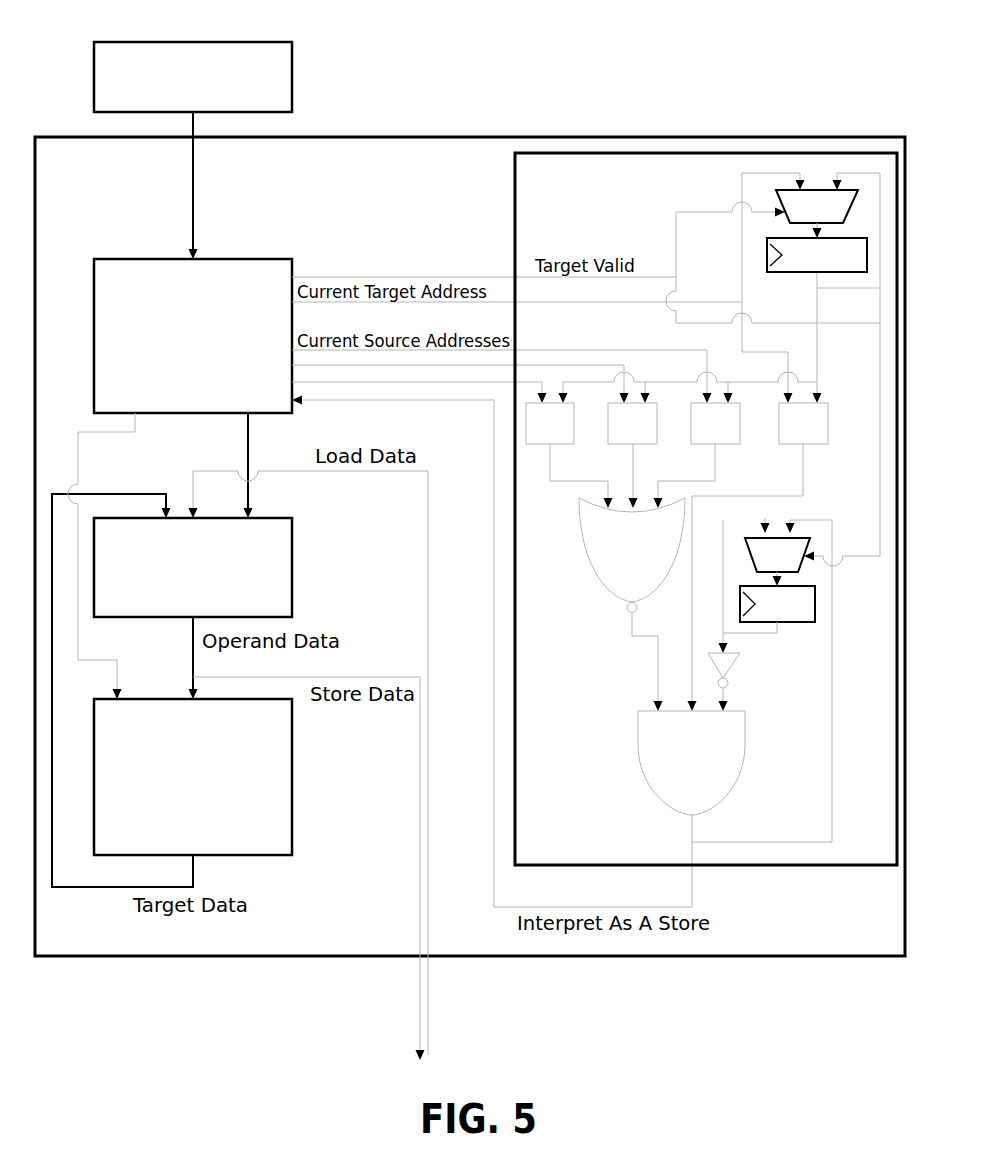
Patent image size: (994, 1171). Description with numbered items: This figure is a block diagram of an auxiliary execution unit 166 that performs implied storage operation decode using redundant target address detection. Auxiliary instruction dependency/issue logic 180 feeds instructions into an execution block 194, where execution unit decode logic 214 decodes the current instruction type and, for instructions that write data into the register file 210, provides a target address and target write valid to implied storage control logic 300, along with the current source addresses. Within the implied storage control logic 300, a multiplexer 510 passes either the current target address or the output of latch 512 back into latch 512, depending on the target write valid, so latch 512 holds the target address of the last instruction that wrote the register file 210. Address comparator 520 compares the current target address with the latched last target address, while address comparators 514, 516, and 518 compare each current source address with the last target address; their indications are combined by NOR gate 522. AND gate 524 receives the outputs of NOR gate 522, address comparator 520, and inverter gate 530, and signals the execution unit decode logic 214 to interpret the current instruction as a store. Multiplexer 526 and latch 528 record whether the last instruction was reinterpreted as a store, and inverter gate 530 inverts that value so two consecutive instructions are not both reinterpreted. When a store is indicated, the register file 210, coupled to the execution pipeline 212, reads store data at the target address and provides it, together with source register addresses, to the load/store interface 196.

The auxiliary execution unit 166 is at (611, 98).
The auxiliary instruction dependency/issue logic 180 is at (272, 42).
The execution block 194 is at (722, 137).
The load/store interface 196 is at (420, 1030).
The register file 210 is at (267, 518).
The execution pipeline 212 is at (272, 855).
The execution unit decode logic 214 is at (108, 259).
The implied storage control logic 300 is at (838, 865).
The multiplexer 510 is at (817, 206).
The latch 512 is at (817, 255).
The address comparator 514 is at (558, 444).
The address comparator 516 is at (641, 444).
The address comparator 518 is at (724, 444).
The address comparator 520 is at (812, 444).
The NOR gate 522 is at (632, 555).
The AND gate 524 is at (691, 763).
The multiplexer 526 is at (777, 555).
The latch 528 is at (777, 604).
The inverter gate 530 is at (732, 666).